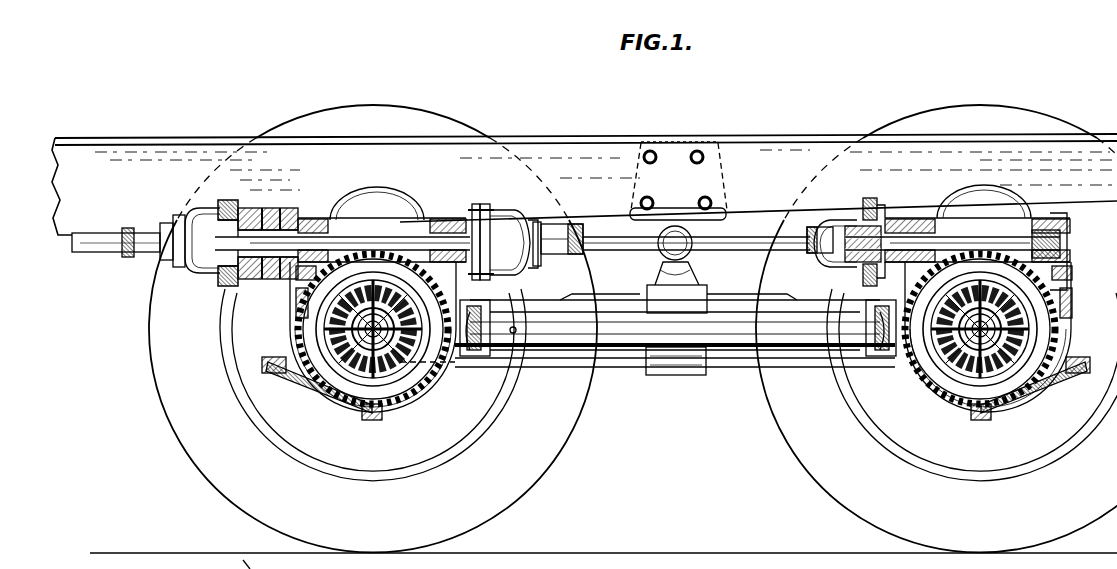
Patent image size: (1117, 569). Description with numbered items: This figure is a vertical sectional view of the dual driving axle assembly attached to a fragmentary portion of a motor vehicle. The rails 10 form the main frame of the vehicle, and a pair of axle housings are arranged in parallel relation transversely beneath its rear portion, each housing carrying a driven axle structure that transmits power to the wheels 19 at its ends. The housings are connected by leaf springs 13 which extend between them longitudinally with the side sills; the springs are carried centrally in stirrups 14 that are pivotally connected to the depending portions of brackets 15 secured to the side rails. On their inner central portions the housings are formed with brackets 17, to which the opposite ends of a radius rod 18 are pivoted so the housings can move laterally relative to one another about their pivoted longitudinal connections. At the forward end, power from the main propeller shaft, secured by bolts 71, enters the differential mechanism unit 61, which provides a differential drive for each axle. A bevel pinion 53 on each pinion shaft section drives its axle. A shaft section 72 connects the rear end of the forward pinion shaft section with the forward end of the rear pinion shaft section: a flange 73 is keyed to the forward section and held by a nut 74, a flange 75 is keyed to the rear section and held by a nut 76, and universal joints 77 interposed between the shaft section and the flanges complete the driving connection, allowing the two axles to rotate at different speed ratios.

The rails 10 is at (584, 184).
The leaf springs 13 is at (728, 362).
The stirrups 14 is at (677, 269).
The brackets 15 is at (697, 176).
The brackets 17 is at (474, 368).
The radius rod 18 is at (675, 322).
The wheels 19 is at (633, 328).
The bevel pinion 53 is at (931, 207).
The differential mechanism unit 61 is at (258, 280).
The bolts 71 is at (237, 205).
The shaft section 72 is at (738, 241).
The flange 73 is at (476, 200).
The nut 74 is at (527, 266).
The flange 75 is at (871, 197).
The nut 76 is at (849, 224).
The universal joints 77 is at (500, 213).